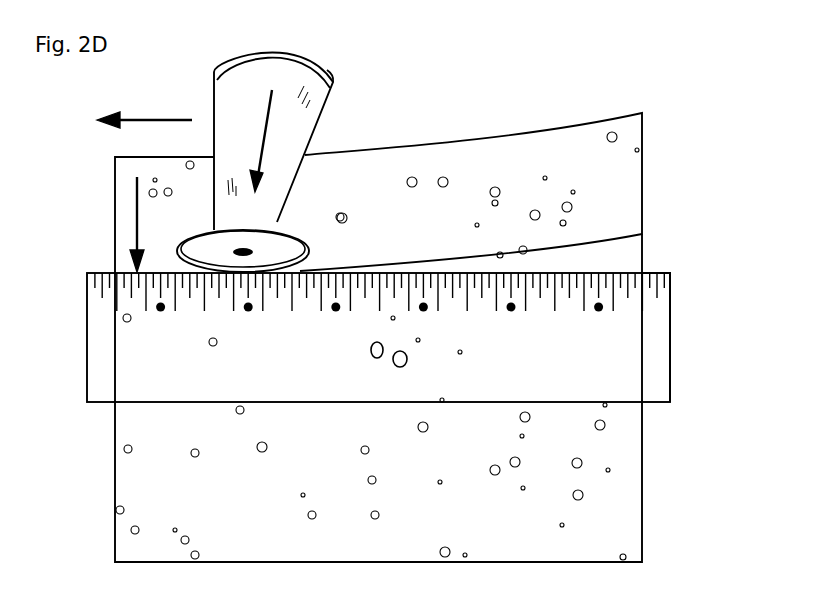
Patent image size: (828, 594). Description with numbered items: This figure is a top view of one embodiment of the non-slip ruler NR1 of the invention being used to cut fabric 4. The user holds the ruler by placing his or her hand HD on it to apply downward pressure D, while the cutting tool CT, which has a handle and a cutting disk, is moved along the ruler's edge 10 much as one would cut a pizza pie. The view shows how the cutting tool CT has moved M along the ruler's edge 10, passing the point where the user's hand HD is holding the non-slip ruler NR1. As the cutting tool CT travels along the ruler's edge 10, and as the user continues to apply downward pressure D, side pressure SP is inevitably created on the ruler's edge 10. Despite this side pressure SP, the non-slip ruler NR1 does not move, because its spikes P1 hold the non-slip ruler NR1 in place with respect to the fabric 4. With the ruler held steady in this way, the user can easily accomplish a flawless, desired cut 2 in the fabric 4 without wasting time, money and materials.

The desired cut 2 is at (447, 263).
The fabric 4 is at (618, 503).
The ruler's edge 10 is at (88, 274).
The cutting tool CT is at (340, 58).
The downward pressure D is at (267, 120).
The movement of cutting tool M is at (168, 117).
The side pressure SP is at (143, 200).
The non-slip ruler NR1 is at (668, 272).
The spikes P1 is at (160, 308).
The hand HD is at (371, 357).